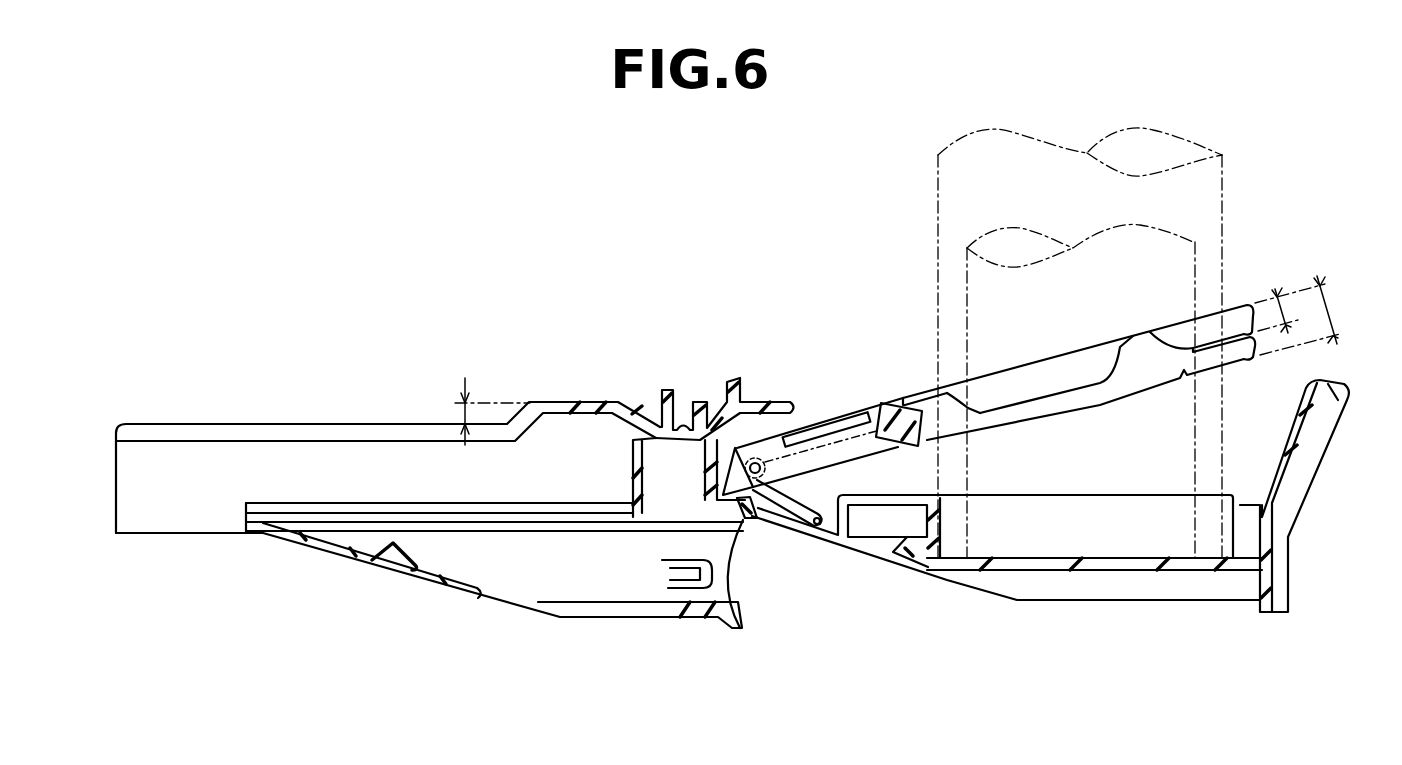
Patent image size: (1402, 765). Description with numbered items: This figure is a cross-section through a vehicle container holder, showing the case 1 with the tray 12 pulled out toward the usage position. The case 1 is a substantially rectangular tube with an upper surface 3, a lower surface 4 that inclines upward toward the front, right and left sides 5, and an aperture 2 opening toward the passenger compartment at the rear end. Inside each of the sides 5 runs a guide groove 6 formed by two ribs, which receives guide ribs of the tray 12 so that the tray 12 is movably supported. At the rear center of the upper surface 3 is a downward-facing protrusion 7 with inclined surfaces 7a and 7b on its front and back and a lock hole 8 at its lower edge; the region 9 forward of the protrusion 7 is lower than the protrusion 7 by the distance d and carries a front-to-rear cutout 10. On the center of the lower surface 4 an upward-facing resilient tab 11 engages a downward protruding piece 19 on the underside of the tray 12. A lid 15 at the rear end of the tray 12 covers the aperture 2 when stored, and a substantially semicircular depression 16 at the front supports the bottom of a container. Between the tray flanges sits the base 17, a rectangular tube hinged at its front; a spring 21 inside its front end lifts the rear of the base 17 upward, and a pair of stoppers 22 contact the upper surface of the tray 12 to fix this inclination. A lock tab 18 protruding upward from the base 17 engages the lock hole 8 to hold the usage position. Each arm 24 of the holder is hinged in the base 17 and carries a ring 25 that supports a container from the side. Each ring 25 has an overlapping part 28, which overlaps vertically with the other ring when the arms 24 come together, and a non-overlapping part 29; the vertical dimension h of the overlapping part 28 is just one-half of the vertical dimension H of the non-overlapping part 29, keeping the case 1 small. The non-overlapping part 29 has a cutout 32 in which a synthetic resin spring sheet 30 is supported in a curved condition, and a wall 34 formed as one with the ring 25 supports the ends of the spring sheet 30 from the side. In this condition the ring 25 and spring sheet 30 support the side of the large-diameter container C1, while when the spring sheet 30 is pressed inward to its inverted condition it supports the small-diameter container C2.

The case 1 is at (449, 460).
The aperture 2 is at (793, 417).
The upper surface 3 is at (600, 403).
The lower surface 4 is at (330, 553).
The sides 5 is at (195, 505).
The guide groove 6 is at (518, 513).
The protrusion 7 is at (703, 415).
The inclined surface 7a is at (620, 425).
The inclined surface 7b is at (735, 410).
The lock hole 8 is at (675, 417).
The region 9 is at (280, 424).
The cutout 10 is at (175, 438).
The resilient tab 11 is at (402, 543).
The tray 12 is at (1077, 547).
The lid 15 is at (1307, 460).
The depression 16 is at (1140, 555).
The base 17 is at (848, 482).
The lock tab 18 is at (689, 445).
The protruding piece 19 is at (907, 548).
The spring 21 is at (797, 527).
The stopper 22 is at (745, 518).
The arm 24 is at (890, 430).
The ring 25 is at (1080, 356).
The overlapping part 28 is at (1237, 318).
The non-overlapping part 29 is at (1193, 430).
The spring sheet 30 is at (1050, 370).
The cutout 32 is at (1043, 397).
The wall 34 is at (950, 397).
The container C1 is at (1222, 150).
The container C2 is at (1167, 230).
The height difference d is at (462, 408).
The vertical dimension of the overlapping parts h is at (1287, 298).
The vertical dimension of the non-overlapping parts H is at (1333, 302).